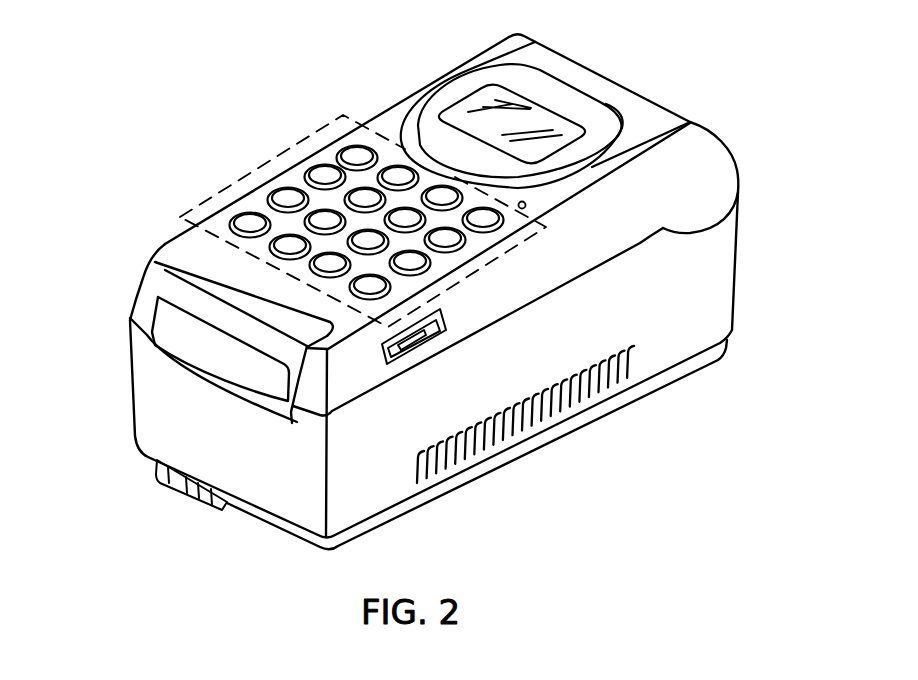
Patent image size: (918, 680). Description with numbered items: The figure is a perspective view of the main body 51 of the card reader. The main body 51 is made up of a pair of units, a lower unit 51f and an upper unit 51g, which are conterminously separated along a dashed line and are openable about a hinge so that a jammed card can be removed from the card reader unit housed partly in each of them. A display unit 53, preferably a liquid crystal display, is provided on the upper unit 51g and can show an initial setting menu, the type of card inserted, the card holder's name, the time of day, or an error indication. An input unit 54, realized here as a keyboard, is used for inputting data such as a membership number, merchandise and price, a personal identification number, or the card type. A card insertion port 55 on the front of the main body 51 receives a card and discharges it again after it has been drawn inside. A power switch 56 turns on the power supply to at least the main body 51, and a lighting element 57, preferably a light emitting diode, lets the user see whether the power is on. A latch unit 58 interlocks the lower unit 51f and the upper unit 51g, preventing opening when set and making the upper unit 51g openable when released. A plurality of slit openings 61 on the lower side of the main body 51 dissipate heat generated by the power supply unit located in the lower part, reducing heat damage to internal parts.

The main body 51 is at (598, 66).
The lower unit 51f is at (658, 350).
The upper unit 51g is at (713, 163).
The display unit 53 is at (483, 118).
The input unit 54 is at (233, 180).
The card insertion port 55 is at (207, 347).
The power switch 56 is at (180, 488).
The lighting element 57 is at (526, 207).
The latch unit 58 is at (420, 340).
The slit openings 61 is at (492, 414).